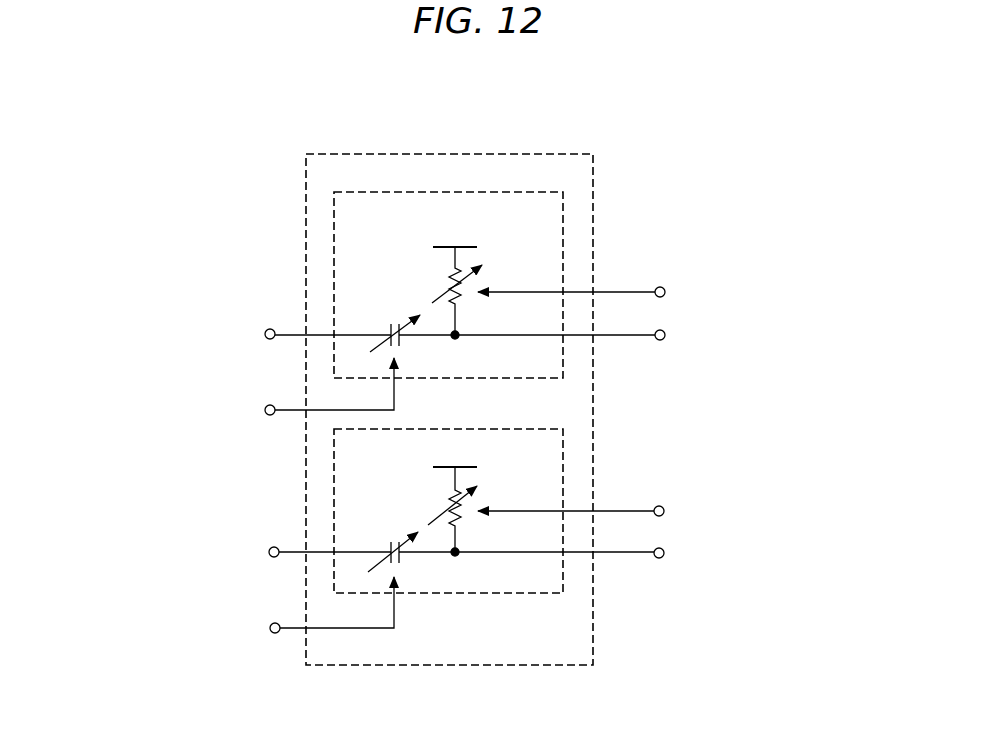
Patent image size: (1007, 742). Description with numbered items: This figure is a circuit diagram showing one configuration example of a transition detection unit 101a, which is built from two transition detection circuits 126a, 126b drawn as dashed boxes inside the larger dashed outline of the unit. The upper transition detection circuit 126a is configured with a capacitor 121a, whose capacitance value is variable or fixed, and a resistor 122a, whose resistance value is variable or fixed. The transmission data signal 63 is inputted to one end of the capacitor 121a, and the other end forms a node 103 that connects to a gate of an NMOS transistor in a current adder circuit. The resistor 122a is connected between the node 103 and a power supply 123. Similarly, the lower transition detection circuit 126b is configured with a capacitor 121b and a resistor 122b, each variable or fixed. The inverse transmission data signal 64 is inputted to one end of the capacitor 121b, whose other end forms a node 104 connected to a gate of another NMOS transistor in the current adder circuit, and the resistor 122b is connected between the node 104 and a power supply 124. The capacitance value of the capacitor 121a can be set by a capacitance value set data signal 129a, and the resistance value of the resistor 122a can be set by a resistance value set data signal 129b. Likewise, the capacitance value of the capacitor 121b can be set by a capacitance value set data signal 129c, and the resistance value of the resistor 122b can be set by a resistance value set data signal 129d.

The transition detection unit 101a is at (377, 153).
The transition detection circuit 126a is at (538, 192).
The transition detection circuit 126b is at (563, 443).
The transmission data signal 63 is at (180, 298).
The inverse transmission data signal 64 is at (172, 513).
The capacitor 121a is at (392, 322).
The capacitor 121b is at (390, 540).
The resistor 122a is at (443, 280).
The resistor 122b is at (459, 491).
The power supply 123 is at (464, 237).
The power supply 124 is at (433, 467).
The capacitance value set data signal [1] 129a is at (113, 440).
The resistance value set data signal [1] 129b is at (765, 268).
The capacitance value set data signal [2] 129c is at (103, 668).
The resistance value set data signal [2] 129d is at (762, 490).
The node 103 is at (635, 338).
The node 104 is at (642, 556).